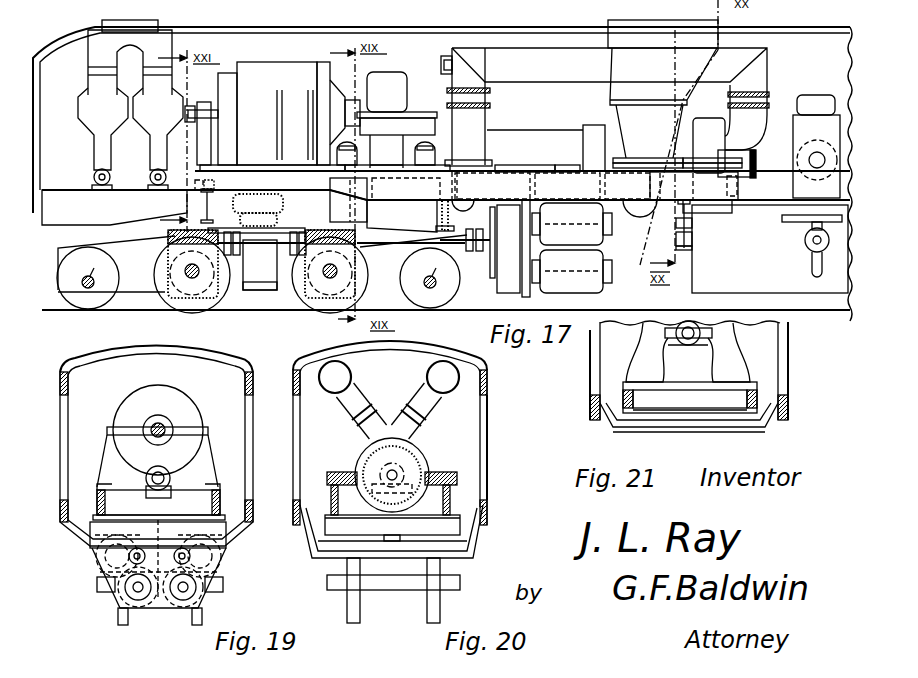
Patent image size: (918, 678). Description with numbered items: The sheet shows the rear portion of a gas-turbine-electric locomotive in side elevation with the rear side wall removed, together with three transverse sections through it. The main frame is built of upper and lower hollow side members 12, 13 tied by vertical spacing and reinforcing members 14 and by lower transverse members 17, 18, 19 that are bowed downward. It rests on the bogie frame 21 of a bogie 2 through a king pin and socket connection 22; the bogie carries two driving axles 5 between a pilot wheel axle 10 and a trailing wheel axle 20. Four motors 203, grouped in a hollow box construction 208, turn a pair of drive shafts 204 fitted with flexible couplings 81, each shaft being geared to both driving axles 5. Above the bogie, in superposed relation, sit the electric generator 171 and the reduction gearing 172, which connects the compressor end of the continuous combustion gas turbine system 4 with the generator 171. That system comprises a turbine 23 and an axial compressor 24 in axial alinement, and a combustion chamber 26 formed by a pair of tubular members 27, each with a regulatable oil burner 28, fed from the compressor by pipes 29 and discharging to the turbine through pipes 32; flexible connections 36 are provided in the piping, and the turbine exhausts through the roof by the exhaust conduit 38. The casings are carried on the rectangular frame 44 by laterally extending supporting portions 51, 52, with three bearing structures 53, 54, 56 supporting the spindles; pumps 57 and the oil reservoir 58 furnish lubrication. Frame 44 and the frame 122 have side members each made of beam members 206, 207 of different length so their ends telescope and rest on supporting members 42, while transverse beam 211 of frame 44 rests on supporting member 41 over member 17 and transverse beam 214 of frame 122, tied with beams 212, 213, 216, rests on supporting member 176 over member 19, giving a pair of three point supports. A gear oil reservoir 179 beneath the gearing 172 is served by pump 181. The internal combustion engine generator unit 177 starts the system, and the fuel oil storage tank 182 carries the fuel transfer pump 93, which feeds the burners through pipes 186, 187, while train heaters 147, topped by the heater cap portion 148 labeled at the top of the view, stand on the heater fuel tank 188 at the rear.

In FIG. 17, the bogie 2 is at (155, 294).
In FIG. 17, the continuous combustion gas turbine system 4 is at (593, 115).
In FIG. 17, the driving axle 5 is at (261, 271).
In FIG. 19, the driving axle 5 is at (223, 586).
In FIG. 20, the driving axle 5 is at (460, 583).
In FIG. 17, the pilot wheel axle 10 is at (430, 278).
In FIG. 19, the upper side member 12 is at (60, 384).
In FIG. 20, the upper side member 12 is at (488, 386).
In FIG. 19, the lower side member 13 is at (60, 514).
In FIG. 20, the lower side member 13 is at (488, 515).
In FIG. 21, the lower side member 13 is at (590, 412).
In FIG. 20, the spacing and reinforcing member 14 is at (488, 441).
In FIG. 21, the spacing and reinforcing member 14 is at (789, 378).
In FIG. 17, the lower transverse spacing and reinforcing member 17 is at (205, 206).
In FIG. 21, the lower transverse spacing and reinforcing member 17 is at (612, 432).
In FIG. 17, the lower transverse spacing and reinforcing member 18 is at (451, 217).
In FIG. 19, the lower transverse spacing and reinforcing member 18 is at (246, 530).
In FIG. 17, the lower transverse spacing and reinforcing member 19 is at (676, 238).
In FIG. 20, the lower transverse spacing and reinforcing member 19 is at (477, 551).
In FIG. 17, the trailing wheel axle 20 is at (88, 278).
In FIG. 17, the bogie frame 21 is at (58, 248).
In FIG. 17, the king pin and socket connection 22 is at (258, 210).
In FIG. 17, the turbine 23 is at (712, 118).
In FIG. 20, the turbine 23 is at (430, 458).
In FIG. 17, the axial compressor 24 is at (551, 130).
In FIG. 17, the combustion chamber 26 is at (583, 69).
In FIG. 20, the elongated tubular member 27 is at (348, 367).
In FIG. 17, the regulatable oil burner 28 is at (443, 60).
In FIG. 17, the pipe 29 is at (486, 121).
In FIG. 17, the pipe 32 is at (762, 132).
In FIG. 20, the pipe 32 is at (340, 414).
In FIG. 17, the flexible portion or connection 36 is at (491, 99).
In FIG. 17, the exhaust conduit 38 is at (642, 22).
In FIG. 17, the supporting member 41 is at (218, 181).
In FIG. 21, the supporting member 41 is at (692, 416).
In FIG. 17, the supporting member 42 is at (442, 212).
In FIG. 17, the rectangular frame 44 is at (287, 185).
In FIG. 17, the laterally extending supporting portion 51 is at (672, 160).
In FIG. 17, the laterally extending supporting portion 52 is at (565, 166).
In FIG. 20, the laterally extending supporting portion 52 is at (347, 470).
In FIG. 17, the bearing structure 53 is at (463, 158).
In FIG. 17, the bearing structure 54 is at (632, 156).
In FIG. 17, the bearing structure 56 is at (757, 160).
In FIG. 17, the pump 57 is at (347, 155).
In FIG. 17, the oil reservoir 58 is at (332, 213).
In FIG. 17, the flexible coupling 81 is at (241, 248).
In FIG. 17, the fuel transfer pump 93 is at (806, 246).
In FIG. 17, the frame 122 is at (575, 190).
In FIG. 17, the train heater 147 is at (84, 92).
In FIG. 17, the cap 148 is at (140, 21).
In FIG. 17, the electric generator 171 is at (292, 67).
In FIG. 21, the electric generator 171 is at (639, 340).
In FIG. 17, the reduction gearing 172 is at (387, 79).
In FIG. 19, the reduction gearing 172 is at (178, 394).
In FIG. 17, the supporting member 176 is at (692, 225).
In FIG. 20, the supporting member 176 is at (392, 536).
In FIG. 17, the internal combustion engine generator unit 177 is at (830, 136).
In FIG. 17, the gear oil reservoir 179 is at (402, 216).
In FIG. 17, the pump 181 is at (406, 189).
In FIG. 17, the fuel oil storage tank 182 is at (700, 291).
In FIG. 17, the pipe 186 is at (812, 267).
In FIG. 17, the pipe 187 is at (807, 220).
In FIG. 17, the heater fuel tank 188 is at (114, 207).
In FIG. 17, the electric driving motor 203 is at (604, 238).
In FIG. 19, the electric driving motor 203 is at (92, 553).
In FIG. 17, the drive shaft 204 is at (410, 246).
In FIG. 19, the drive shaft 204 is at (128, 559).
In FIG. 17, the beam member 206 is at (524, 161).
In FIG. 20, the beam member 206 is at (331, 482).
In FIG. 17, the beam member 207 is at (323, 200).
In FIG. 19, the beam member 207 is at (98, 490).
In FIG. 20, the beam member 207 is at (392, 525).
In FIG. 17, the hollow box construction 208 is at (526, 296).
In FIG. 19, the hollow box construction 208 is at (158, 535).
In FIG. 17, the transverse beam 211 is at (196, 181).
In FIG. 21, the transverse beam 211 is at (671, 396).
In FIG. 17, the transverse beam 212 is at (465, 191).
In FIG. 19, the transverse beam 212 is at (165, 470).
In FIG. 17, the transverse beam 213 is at (612, 188).
In FIG. 17, the transverse beam 214 is at (694, 186).
In FIG. 20, the transverse beam 214 is at (362, 542).
In FIG. 17, the transverse beam 216 is at (739, 189).
In FIG. 20, the transverse beam 216 is at (451, 485).